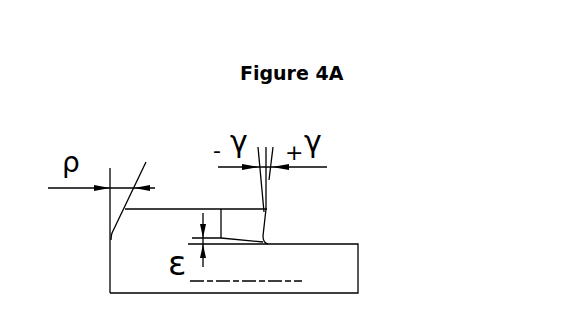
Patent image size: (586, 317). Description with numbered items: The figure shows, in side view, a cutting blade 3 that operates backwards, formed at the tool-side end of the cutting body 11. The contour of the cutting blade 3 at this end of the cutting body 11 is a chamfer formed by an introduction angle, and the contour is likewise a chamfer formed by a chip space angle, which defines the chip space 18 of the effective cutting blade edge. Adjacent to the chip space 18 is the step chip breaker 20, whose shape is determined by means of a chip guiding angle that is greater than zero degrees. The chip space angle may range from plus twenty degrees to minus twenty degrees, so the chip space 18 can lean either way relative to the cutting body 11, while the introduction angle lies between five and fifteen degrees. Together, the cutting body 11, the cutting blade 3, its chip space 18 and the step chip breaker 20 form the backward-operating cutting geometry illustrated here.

The cutting blade 3 is at (173, 228).
The step chip breaker 20 is at (236, 238).
The chip space 18 is at (263, 229).
The cutting body 11 is at (335, 261).